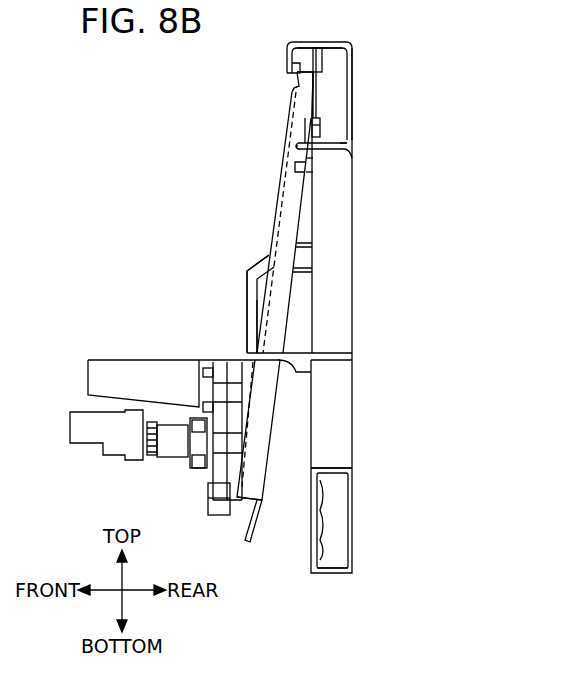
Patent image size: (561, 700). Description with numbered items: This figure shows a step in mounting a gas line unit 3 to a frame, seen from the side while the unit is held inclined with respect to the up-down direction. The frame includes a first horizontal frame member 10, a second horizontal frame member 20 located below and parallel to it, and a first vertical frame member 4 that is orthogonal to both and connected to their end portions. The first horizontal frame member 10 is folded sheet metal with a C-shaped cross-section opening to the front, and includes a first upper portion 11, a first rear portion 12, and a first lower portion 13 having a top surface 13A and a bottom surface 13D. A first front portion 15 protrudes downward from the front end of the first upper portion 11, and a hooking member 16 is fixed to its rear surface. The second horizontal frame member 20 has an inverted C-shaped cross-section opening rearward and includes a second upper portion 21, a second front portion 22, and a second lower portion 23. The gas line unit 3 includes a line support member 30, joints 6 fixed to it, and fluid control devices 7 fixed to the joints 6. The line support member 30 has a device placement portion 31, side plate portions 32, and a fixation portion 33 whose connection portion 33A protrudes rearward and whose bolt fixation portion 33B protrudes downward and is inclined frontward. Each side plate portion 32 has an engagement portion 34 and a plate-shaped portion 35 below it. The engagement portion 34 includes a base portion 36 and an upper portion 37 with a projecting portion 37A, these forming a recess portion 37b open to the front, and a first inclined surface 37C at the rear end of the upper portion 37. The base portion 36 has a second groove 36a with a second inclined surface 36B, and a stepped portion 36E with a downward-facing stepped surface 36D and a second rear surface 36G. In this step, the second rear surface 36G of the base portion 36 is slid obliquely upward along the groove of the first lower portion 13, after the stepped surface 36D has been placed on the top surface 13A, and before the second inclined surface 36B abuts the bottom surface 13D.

The gas line unit 3 is at (93, 298).
The first vertical frame member 4 is at (345, 325).
The joint 6 is at (233, 420).
The fluid control device 7 is at (133, 388).
The first horizontal frame member 10 is at (372, 32).
The first upper portion 11 is at (333, 45).
The first rear portion 12 is at (349, 70).
The first lower portion 13 is at (349, 152).
The top surface 13A is at (347, 143).
The bottom surface 13D is at (296, 166).
The first front portion 15 is at (290, 64).
The hooking member 16 is at (308, 62).
The second horizontal frame member 20 is at (380, 486).
The second upper portion 21 is at (337, 467).
The second front portion 22 is at (335, 508).
The second lower portion 23 is at (340, 568).
The line support member 30 is at (190, 250).
The device placement portion 31 is at (267, 290).
The side plate portion 32 is at (278, 322).
The fixation portion 33 is at (190, 523).
The connection portion 33A is at (250, 506).
The bolt fixation portion 33B is at (246, 519).
The engagement portion 34 is at (223, 105).
The plate-shaped portion 35 is at (286, 292).
The base portion 36 is at (297, 124).
The second groove 36a is at (312, 162).
The second inclined surface 36B is at (315, 170).
The stepped surface 36D is at (321, 128).
The stepped portion 36E is at (321, 119).
The second rear surface 36G is at (298, 152).
The upper portion 37 is at (291, 97).
The projecting portion 37A is at (296, 75).
The recess portion 37b is at (298, 92).
The first inclined surface 37C is at (314, 86).